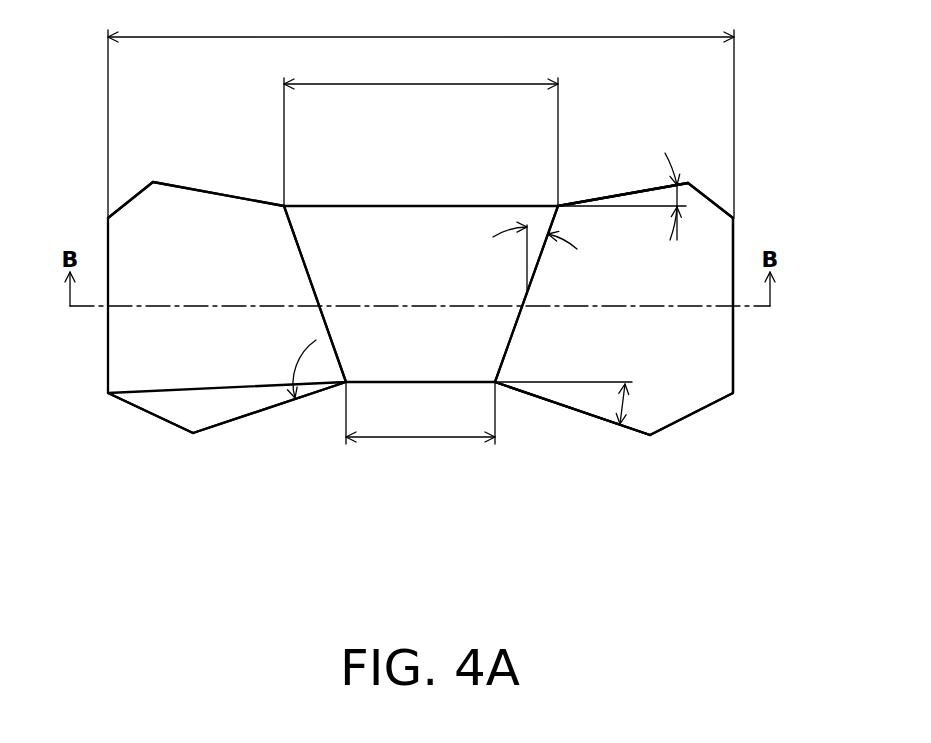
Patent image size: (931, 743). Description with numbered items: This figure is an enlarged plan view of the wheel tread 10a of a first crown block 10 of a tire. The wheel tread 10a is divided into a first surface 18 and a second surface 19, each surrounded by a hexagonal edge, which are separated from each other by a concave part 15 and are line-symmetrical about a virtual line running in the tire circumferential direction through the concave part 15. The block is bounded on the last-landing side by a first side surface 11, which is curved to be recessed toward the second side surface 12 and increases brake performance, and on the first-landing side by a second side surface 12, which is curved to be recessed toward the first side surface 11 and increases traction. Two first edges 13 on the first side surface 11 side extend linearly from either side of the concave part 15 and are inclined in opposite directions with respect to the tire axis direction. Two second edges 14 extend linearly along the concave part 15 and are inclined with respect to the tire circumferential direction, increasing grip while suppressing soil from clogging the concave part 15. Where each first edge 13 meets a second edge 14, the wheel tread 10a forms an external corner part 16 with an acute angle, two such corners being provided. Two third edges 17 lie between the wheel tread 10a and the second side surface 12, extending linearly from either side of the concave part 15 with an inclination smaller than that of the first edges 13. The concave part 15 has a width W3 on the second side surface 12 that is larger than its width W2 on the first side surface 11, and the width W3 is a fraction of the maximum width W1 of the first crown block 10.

The first crown block 10 is at (152, 160).
The wheel tread 10a is at (441, 349).
The first surface 18 is at (172, 357).
The second surface 19 is at (695, 373).
The first side surface 11 is at (537, 404).
The second side surface 12 is at (599, 196).
The first edge 13 is at (226, 426).
The second edge 14 is at (300, 252).
The concave part 15 is at (389, 266).
The external corner part 16 is at (329, 387).
The third edge 17 is at (213, 193).
The maximum width W1 is at (421, 114).
The width of the concave part on the first side surface W2 is at (420, 425).
The width of the concave part on the second side surface W3 is at (421, 131).